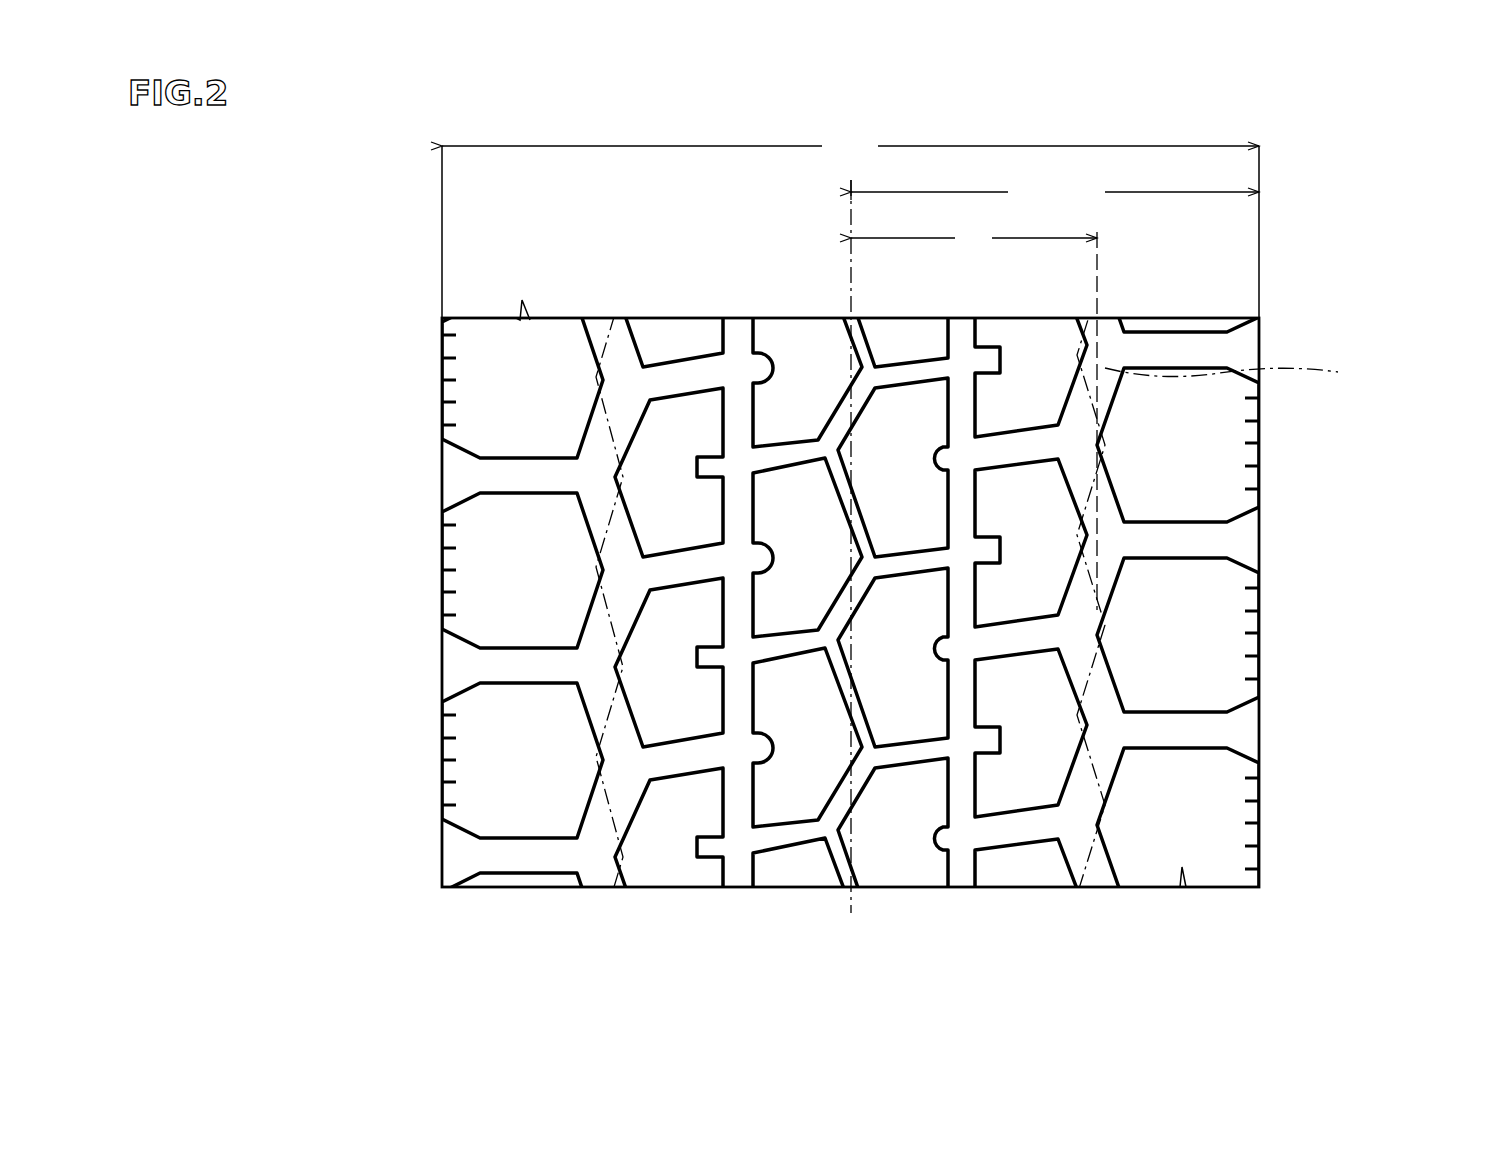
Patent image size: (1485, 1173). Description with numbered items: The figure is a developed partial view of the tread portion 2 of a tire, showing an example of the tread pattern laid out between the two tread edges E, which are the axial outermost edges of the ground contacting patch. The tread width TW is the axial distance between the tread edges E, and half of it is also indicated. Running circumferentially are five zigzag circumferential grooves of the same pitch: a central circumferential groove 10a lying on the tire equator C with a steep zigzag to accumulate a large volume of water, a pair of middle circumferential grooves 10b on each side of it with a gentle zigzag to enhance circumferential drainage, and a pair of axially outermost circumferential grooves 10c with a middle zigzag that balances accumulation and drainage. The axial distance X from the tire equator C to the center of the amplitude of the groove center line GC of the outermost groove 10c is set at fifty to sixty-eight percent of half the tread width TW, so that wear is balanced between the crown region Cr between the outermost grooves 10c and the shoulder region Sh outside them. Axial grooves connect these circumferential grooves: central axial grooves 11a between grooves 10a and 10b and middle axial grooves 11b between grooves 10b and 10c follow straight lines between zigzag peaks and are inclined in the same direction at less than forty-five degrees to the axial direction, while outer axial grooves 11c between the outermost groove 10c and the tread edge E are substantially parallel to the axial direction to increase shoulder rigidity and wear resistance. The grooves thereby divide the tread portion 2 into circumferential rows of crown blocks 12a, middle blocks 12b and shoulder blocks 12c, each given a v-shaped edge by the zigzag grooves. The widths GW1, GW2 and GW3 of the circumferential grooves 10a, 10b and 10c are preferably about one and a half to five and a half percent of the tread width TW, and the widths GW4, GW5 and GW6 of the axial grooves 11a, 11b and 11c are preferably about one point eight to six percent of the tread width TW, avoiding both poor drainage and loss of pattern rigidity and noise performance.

The tread portion 2 is at (580, 292).
The central circumferential groove 10a is at (830, 837).
The middle circumferential groove 10b is at (737, 833).
The axially outermost circumferential groove 10c is at (593, 832).
The central axial groove 11a is at (906, 372).
The middle axial groove 11b is at (680, 384).
The outer axial groove 11c is at (1157, 362).
The crown block 12a is at (837, 561).
The middle block 12b is at (697, 519).
The shoulder block 12c is at (552, 582).
The tire equator C is at (848, 252).
The crown region Cr is at (787, 300).
The shoulder region Sh is at (483, 300).
The tread edge E is at (442, 535).
The groove center line GC is at (1243, 380).
The tread width TW is at (850, 172).
The axial distance X is at (974, 417).
The width of central circumferential groove GW1 is at (875, 640).
The width of middle circumferential groove GW2 is at (912, 602).
The width of axially outermost circumferential groove GW3 is at (1037, 758).
The width of central axial groove GW4 is at (893, 600).
The width of middle axial groove GW5 is at (1005, 500).
The width of outer axial groove GW6 is at (1144, 780).